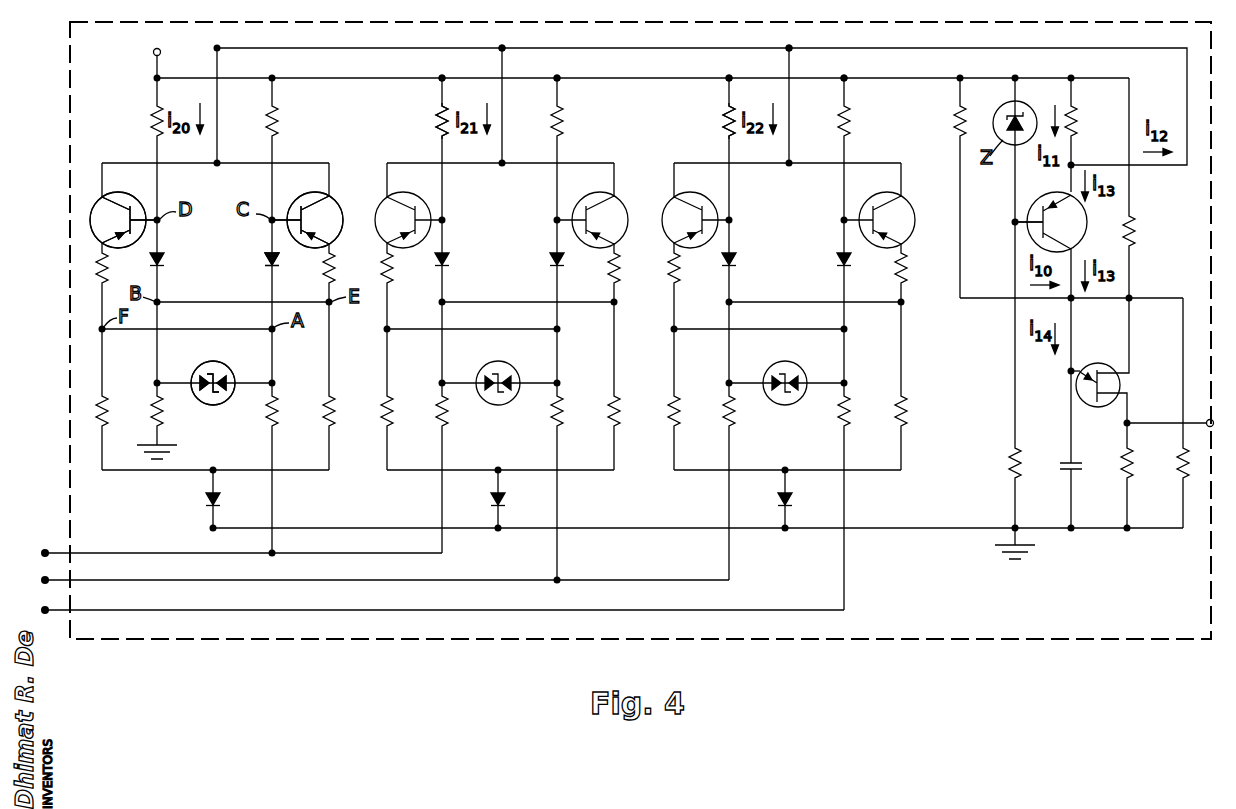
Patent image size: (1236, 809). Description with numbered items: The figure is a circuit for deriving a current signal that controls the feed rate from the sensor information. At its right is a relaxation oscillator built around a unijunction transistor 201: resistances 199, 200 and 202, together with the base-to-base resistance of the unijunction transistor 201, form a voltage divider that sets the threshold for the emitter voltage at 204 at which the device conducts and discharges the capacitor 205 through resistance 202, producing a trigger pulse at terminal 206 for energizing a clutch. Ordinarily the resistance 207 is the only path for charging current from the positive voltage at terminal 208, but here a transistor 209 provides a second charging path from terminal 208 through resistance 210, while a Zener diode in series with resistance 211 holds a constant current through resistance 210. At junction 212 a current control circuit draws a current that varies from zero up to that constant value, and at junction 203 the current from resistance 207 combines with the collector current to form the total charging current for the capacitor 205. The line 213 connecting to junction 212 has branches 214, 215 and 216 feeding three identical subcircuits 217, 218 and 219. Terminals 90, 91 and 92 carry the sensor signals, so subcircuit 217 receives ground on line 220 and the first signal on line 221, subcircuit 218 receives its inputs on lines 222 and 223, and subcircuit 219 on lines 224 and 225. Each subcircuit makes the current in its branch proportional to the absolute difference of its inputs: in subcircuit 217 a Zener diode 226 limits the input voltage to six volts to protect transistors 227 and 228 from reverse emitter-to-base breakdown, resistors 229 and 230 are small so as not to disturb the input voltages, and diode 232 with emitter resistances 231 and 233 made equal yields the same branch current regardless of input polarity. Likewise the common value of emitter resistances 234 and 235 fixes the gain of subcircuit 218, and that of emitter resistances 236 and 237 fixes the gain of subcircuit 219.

The terminal 90 is at (45, 551).
The terminal 91 is at (44, 579).
The terminal 92 is at (44, 609).
The resistance 199 is at (1180, 464).
The resistance 200 is at (1133, 233).
The unijunction transistor 201 is at (1110, 359).
The resistance 202 is at (1123, 457).
The junction 203 is at (1074, 301).
The emitter voltage point 204 is at (1068, 373).
The capacitor 205 is at (1068, 461).
The terminal 206 is at (1205, 421).
The resistance 207 is at (957, 126).
The terminal 208 is at (153, 52).
The transistor 209 is at (1050, 196).
The resistance 210 is at (1074, 118).
The resistance 211 is at (1010, 460).
The junction 212 is at (1073, 163).
The line 213 is at (838, 48).
The branch 214 is at (219, 125).
The branch 215 is at (504, 125).
The branch 216 is at (791, 125).
The subcircuit 217 is at (229, 271).
The subcircuit 218 is at (515, 271).
The subcircuit 219 is at (801, 271).
The line 220 is at (160, 439).
The line 221 is at (273, 447).
The line 222 is at (444, 448).
The line 223 is at (559, 448).
The line 224 is at (731, 448).
The line 225 is at (846, 448).
The Zener diode 226 is at (241, 359).
The transistor 227 is at (145, 195).
The transistor 228 is at (317, 195).
The resistor 229 is at (154, 411).
The resistor 230 is at (268, 424).
The emitter resistance 231 is at (334, 282).
The diode 232 is at (278, 263).
The emitter resistance 233 is at (104, 282).
The emitter resistance 234 is at (616, 288).
The emitter resistance 235 is at (389, 288).
The emitter resistance 236 is at (903, 288).
The emitter resistance 237 is at (676, 288).